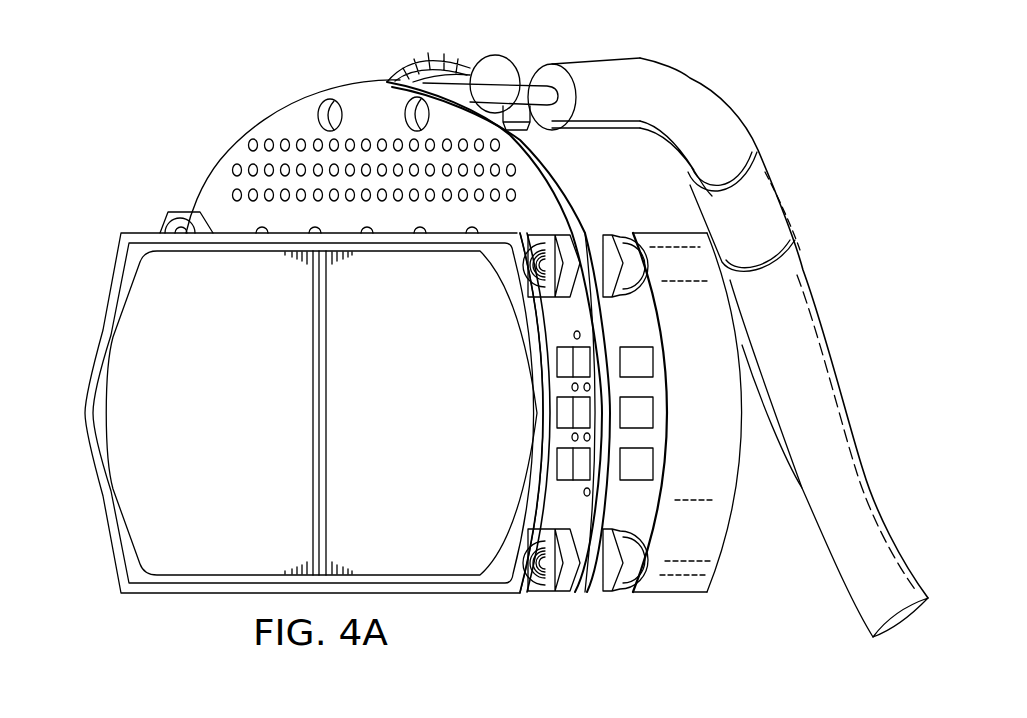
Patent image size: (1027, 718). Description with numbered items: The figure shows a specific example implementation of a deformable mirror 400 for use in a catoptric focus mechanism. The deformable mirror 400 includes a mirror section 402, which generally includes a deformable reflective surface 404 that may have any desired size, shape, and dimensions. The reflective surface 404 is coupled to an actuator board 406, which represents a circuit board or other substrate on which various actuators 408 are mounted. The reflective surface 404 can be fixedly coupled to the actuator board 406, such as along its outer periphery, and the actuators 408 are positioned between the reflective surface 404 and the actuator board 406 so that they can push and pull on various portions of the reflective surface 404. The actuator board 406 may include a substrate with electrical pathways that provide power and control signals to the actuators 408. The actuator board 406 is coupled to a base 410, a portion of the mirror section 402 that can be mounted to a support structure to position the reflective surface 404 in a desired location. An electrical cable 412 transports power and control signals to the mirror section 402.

The deformable mirror 400 is at (270, 57).
The mirror section 402 is at (196, 146).
The deformable reflective surface 404 is at (130, 528).
The actuator board 406 is at (284, 129).
The actuators 408 is at (560, 463).
The base 410 is at (721, 534).
The electrical cable 412 is at (687, 87).